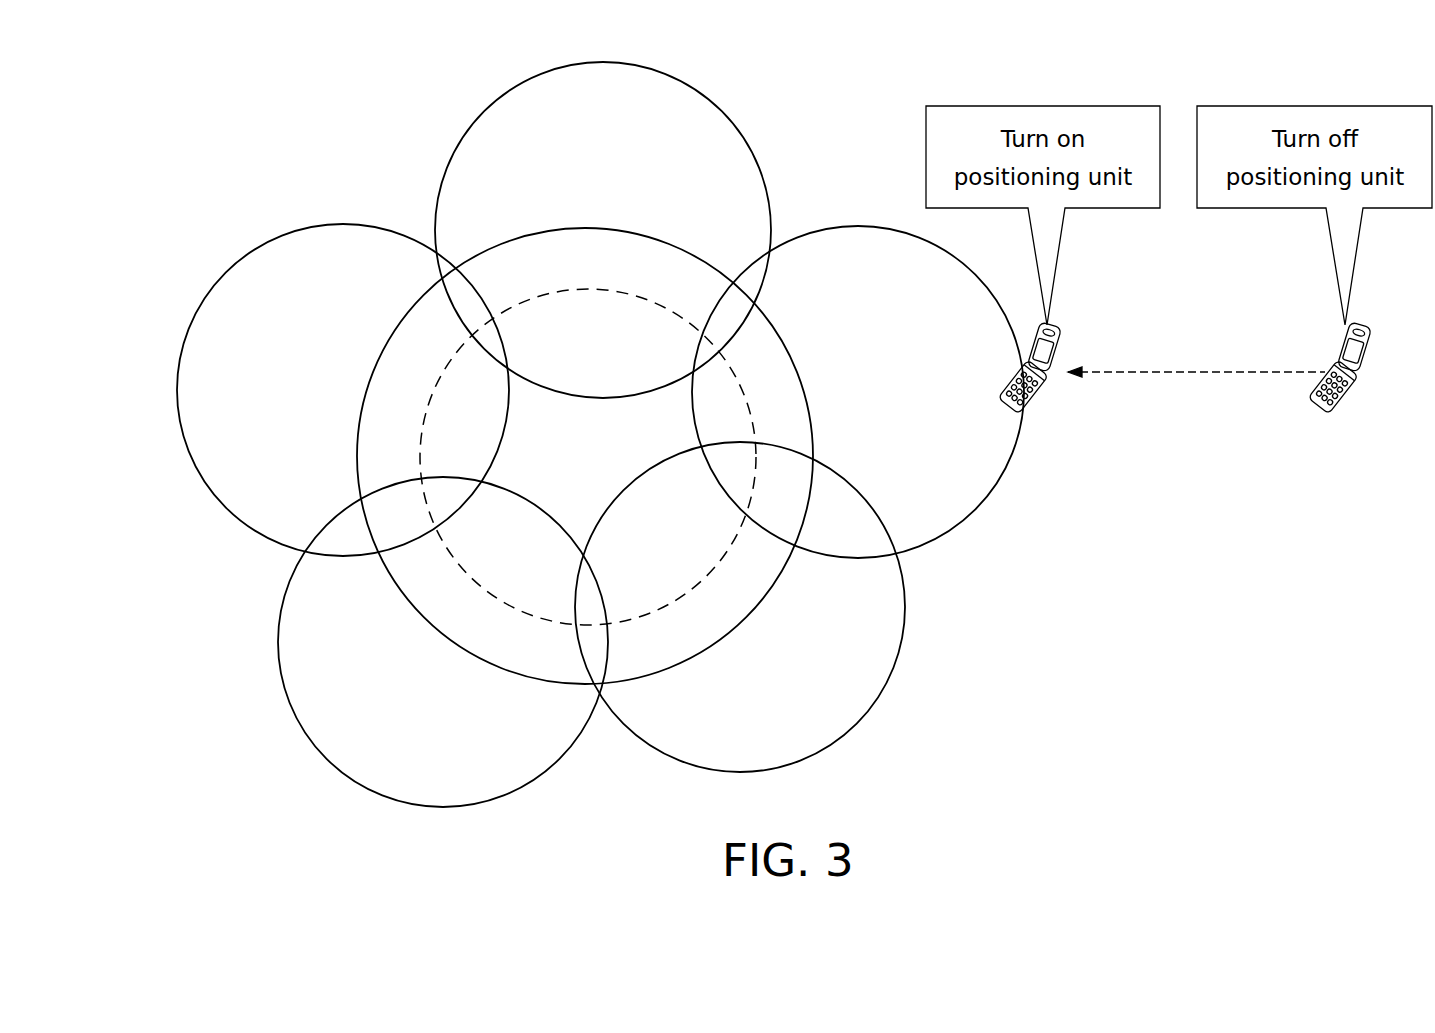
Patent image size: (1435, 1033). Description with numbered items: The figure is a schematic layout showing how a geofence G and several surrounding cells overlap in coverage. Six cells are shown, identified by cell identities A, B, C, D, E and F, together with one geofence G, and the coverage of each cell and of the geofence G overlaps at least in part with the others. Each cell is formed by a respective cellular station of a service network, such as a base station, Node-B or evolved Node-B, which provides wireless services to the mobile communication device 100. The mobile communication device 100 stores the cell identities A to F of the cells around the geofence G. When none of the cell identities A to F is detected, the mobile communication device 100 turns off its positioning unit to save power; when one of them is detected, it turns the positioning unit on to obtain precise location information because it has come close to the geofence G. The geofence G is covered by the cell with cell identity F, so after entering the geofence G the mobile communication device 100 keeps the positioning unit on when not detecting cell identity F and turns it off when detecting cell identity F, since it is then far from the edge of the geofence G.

The cell identity A is at (198, 305).
The cell identity B is at (475, 123).
The cell identity C is at (318, 755).
The cell identity D is at (858, 713).
The cell identity E is at (858, 225).
The cell identity F is at (385, 342).
The geofence G is at (592, 290).
The mobile communication device 100 is at (1040, 400).